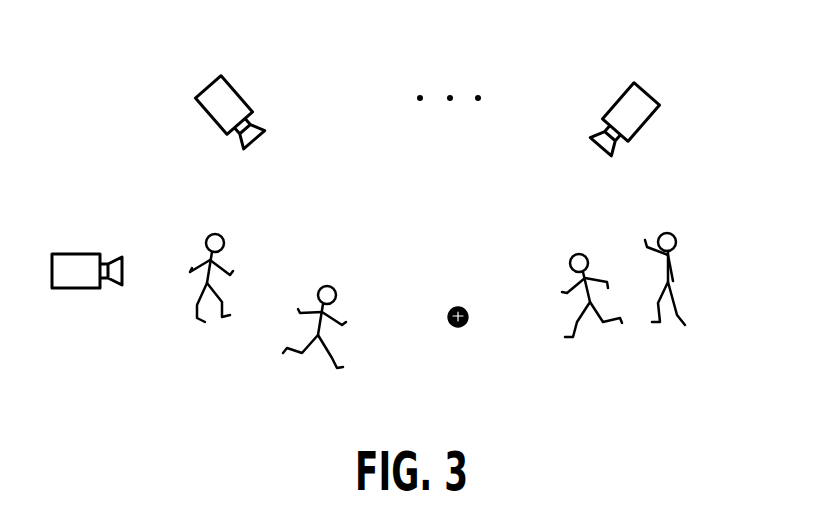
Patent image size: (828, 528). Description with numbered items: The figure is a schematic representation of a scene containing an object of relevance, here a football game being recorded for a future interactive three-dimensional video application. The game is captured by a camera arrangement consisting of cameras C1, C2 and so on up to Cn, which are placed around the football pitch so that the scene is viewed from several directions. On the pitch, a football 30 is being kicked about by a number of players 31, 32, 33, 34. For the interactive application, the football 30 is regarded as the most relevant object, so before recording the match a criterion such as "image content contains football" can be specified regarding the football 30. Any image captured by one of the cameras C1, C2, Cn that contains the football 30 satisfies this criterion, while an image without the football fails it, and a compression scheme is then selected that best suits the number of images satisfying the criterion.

The camera C1 is at (82, 260).
The camera C2 is at (213, 93).
The camera Cn is at (640, 102).
The football 30 is at (465, 325).
The player 31 is at (225, 240).
The player 32 is at (332, 366).
The player 33 is at (578, 327).
The player 34 is at (677, 303).